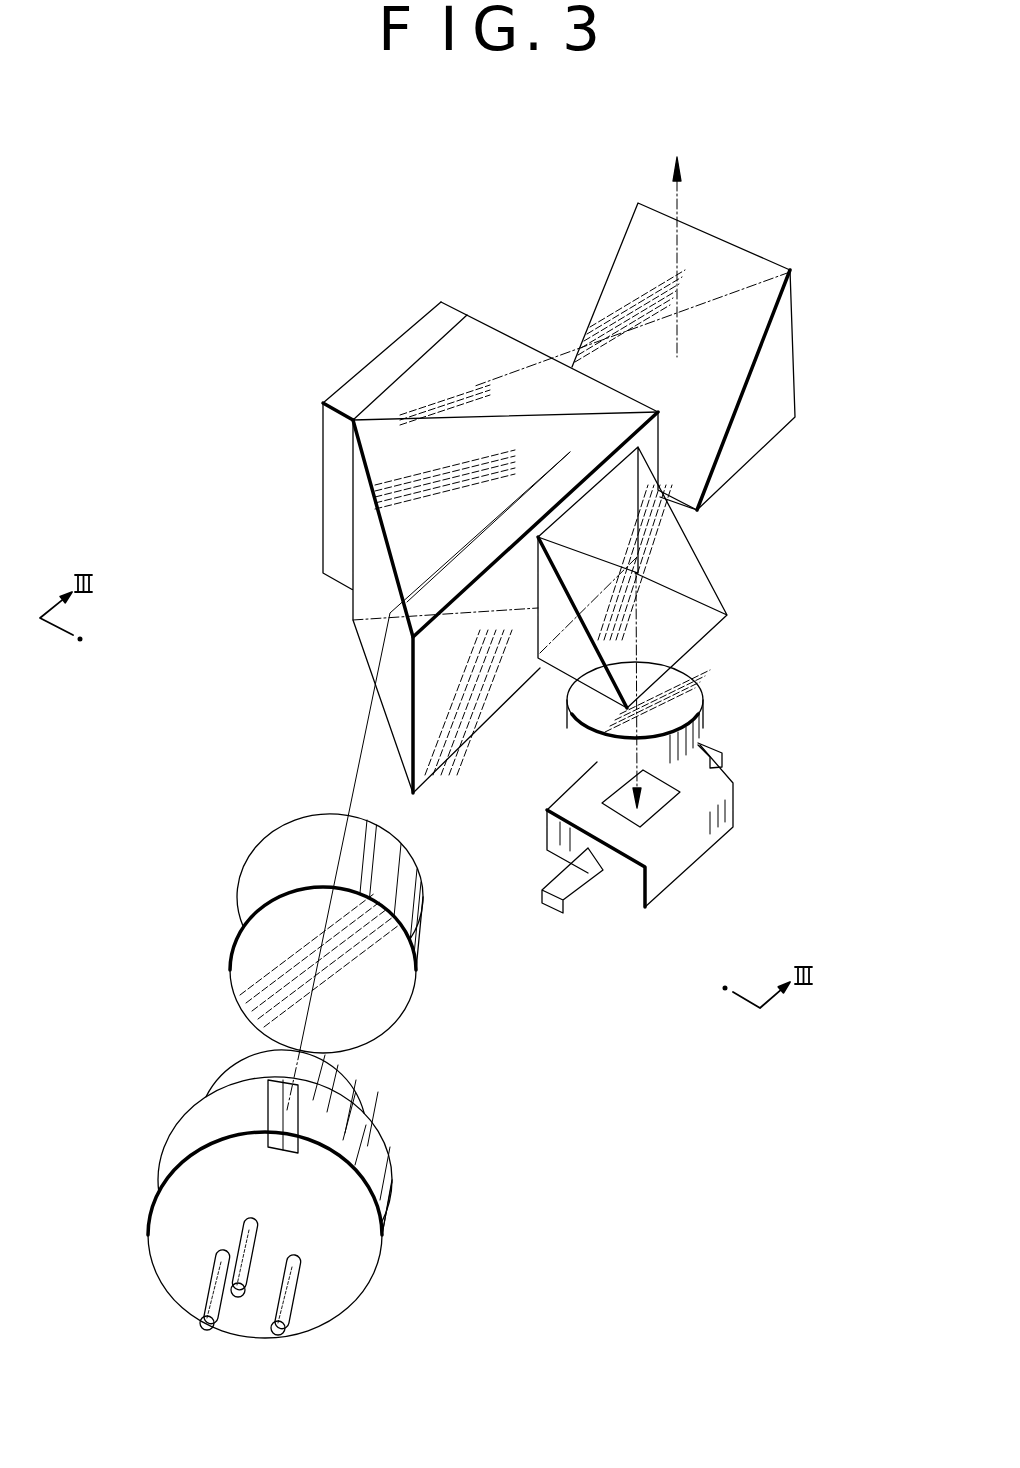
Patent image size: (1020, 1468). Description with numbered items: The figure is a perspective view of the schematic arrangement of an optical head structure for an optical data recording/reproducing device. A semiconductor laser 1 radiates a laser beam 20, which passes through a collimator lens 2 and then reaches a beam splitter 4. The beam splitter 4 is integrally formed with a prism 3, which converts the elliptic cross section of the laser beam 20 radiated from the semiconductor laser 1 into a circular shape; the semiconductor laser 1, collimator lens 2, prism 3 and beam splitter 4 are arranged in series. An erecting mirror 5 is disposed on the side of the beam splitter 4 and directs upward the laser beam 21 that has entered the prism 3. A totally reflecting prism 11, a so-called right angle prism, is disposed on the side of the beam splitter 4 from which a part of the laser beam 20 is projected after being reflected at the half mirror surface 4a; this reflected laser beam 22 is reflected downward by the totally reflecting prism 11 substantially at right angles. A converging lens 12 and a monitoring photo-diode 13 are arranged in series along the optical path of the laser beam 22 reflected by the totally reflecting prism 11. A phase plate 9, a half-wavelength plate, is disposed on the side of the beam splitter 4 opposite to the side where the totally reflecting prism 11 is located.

The semiconductor laser 1 is at (187, 1190).
The collimator lens 2 is at (270, 875).
The laser beam 20 is at (323, 935).
The prism 3 is at (388, 450).
The beam splitter 4 is at (448, 377).
The half mirror surface 4a is at (417, 408).
The phase plate 9 is at (422, 345).
The erecting mirror 5 is at (637, 228).
The laser beam 21 is at (680, 297).
The totally reflecting prism 11 is at (680, 571).
The laser beam 22 is at (568, 675).
The converging lens 12 is at (703, 697).
The monitoring photo-diode 13 is at (700, 790).